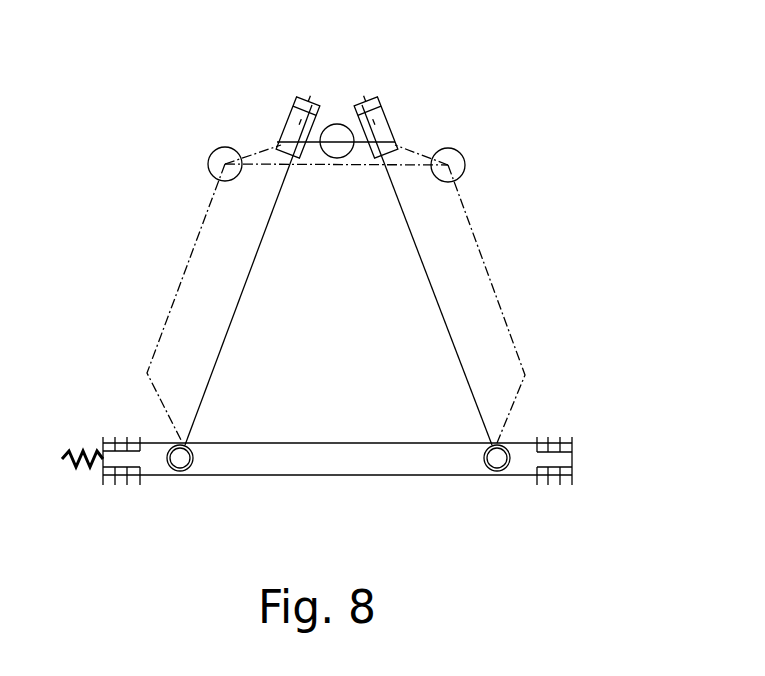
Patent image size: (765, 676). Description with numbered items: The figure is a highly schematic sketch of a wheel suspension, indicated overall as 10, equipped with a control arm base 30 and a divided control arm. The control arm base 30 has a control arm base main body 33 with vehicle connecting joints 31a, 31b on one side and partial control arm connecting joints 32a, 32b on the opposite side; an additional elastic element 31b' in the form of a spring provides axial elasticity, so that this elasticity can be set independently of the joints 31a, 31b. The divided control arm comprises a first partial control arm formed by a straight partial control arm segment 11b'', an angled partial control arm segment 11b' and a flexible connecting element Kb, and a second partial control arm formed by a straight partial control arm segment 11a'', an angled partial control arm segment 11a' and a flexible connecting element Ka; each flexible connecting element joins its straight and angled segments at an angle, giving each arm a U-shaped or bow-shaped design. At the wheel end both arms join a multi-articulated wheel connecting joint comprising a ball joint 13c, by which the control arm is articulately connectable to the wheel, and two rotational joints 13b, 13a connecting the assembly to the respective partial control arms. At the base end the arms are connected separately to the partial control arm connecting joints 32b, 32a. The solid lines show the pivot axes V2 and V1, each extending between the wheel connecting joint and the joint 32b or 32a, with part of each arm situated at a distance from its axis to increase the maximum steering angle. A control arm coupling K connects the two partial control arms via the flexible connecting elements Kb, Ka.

The actuating device 10 is at (565, 109).
The control arm base 30 is at (290, 455).
The vehicle connecting joint 31a is at (563, 443).
The vehicle connecting joint 31b is at (79, 428).
The elastic element 31b' is at (86, 498).
The partial control arm connecting joint 32a is at (503, 443).
The partial control arm connecting joint 32b is at (177, 447).
The control arm base main body 33 is at (573, 460).
The pivot axis V1 is at (450, 332).
The pivot axis V2 is at (232, 313).
The control arm coupling K is at (333, 158).
The flexible connecting element Ka is at (465, 158).
The flexible connecting element Kb is at (215, 162).
The angled partial control arm segment 11a' is at (529, 304).
The angled partial control arm segment 11b' is at (152, 303).
The straight partial control arm segment 11a'' is at (463, 122).
The straight partial control arm segment 11b'' is at (229, 116).
The rotational joint 13a is at (398, 130).
The rotational joint 13b is at (281, 143).
The ball joint 13c is at (337, 124).